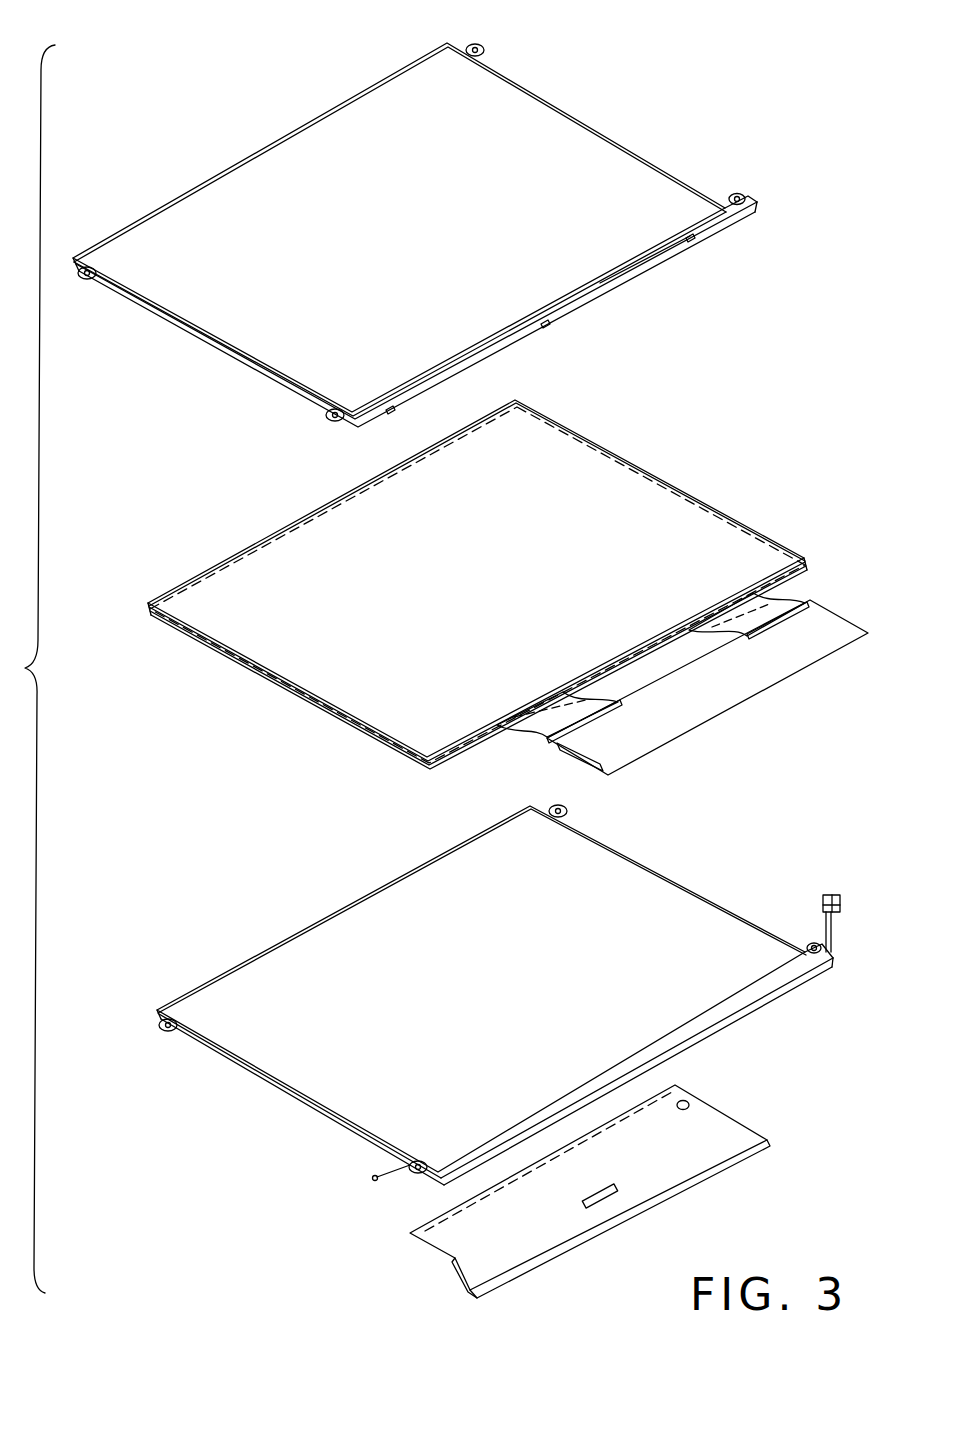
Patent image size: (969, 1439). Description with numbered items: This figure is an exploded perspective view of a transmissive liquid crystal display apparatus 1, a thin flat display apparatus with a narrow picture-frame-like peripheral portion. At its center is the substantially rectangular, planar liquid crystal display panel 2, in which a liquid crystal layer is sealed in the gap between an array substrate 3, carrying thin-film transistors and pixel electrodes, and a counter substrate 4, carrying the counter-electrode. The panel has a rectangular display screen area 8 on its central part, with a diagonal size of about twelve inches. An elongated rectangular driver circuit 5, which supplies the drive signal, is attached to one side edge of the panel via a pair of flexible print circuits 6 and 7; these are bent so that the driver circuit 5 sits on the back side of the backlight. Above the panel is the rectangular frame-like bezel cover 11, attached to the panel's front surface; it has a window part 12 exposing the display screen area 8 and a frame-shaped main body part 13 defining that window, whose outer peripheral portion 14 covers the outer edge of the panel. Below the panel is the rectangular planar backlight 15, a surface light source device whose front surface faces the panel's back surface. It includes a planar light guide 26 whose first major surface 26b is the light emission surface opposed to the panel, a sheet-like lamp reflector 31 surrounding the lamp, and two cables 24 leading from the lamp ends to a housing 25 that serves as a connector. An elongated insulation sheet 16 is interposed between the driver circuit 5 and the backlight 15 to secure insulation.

The liquid crystal display apparatus 1 is at (614, 31).
The liquid crystal display panel 2 is at (516, 590).
The array substrate 3 is at (807, 563).
The counter substrate 4 is at (720, 507).
The driver circuit 5 is at (843, 617).
The flexible print circuit 6 is at (797, 593).
The flexible print circuit 7 is at (543, 735).
The display screen area 8 is at (567, 455).
The bezel cover 11 is at (415, 235).
The window part 12 is at (302, 140).
The main body part 13 is at (715, 223).
The outer peripheral portion 14 is at (219, 357).
The backlight 15 is at (525, 991).
The insulation sheet 16 is at (730, 1106).
The cables 24 is at (858, 904).
The housing 25 is at (843, 900).
The light guide 26 is at (495, 993).
The first major surface 26b is at (573, 855).
The lamp reflector 31 is at (648, 1047).